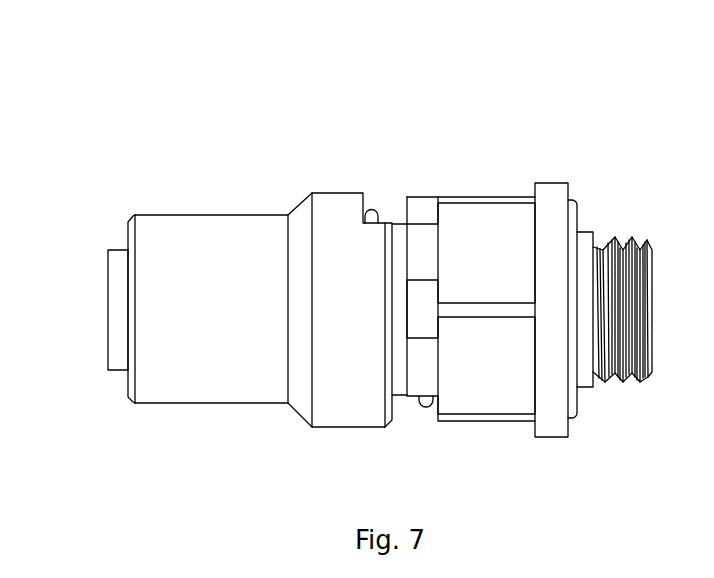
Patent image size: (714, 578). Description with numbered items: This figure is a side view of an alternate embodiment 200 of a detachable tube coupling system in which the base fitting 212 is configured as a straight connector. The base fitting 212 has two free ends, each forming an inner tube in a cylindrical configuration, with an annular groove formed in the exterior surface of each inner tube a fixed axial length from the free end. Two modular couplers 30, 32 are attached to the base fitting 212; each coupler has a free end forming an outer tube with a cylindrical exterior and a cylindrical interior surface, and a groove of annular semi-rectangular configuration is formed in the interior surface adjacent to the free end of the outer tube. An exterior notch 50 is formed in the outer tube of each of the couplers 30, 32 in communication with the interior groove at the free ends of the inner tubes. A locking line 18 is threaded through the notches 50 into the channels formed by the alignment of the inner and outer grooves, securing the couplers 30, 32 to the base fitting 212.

The alternate embodiment 200 is at (196, 112).
The modular coupler 32 is at (133, 215).
The exterior notch 50 is at (362, 192).
The locking line 18 is at (372, 210).
The base fitting 212 is at (400, 224).
The modular coupler 30 is at (505, 197).